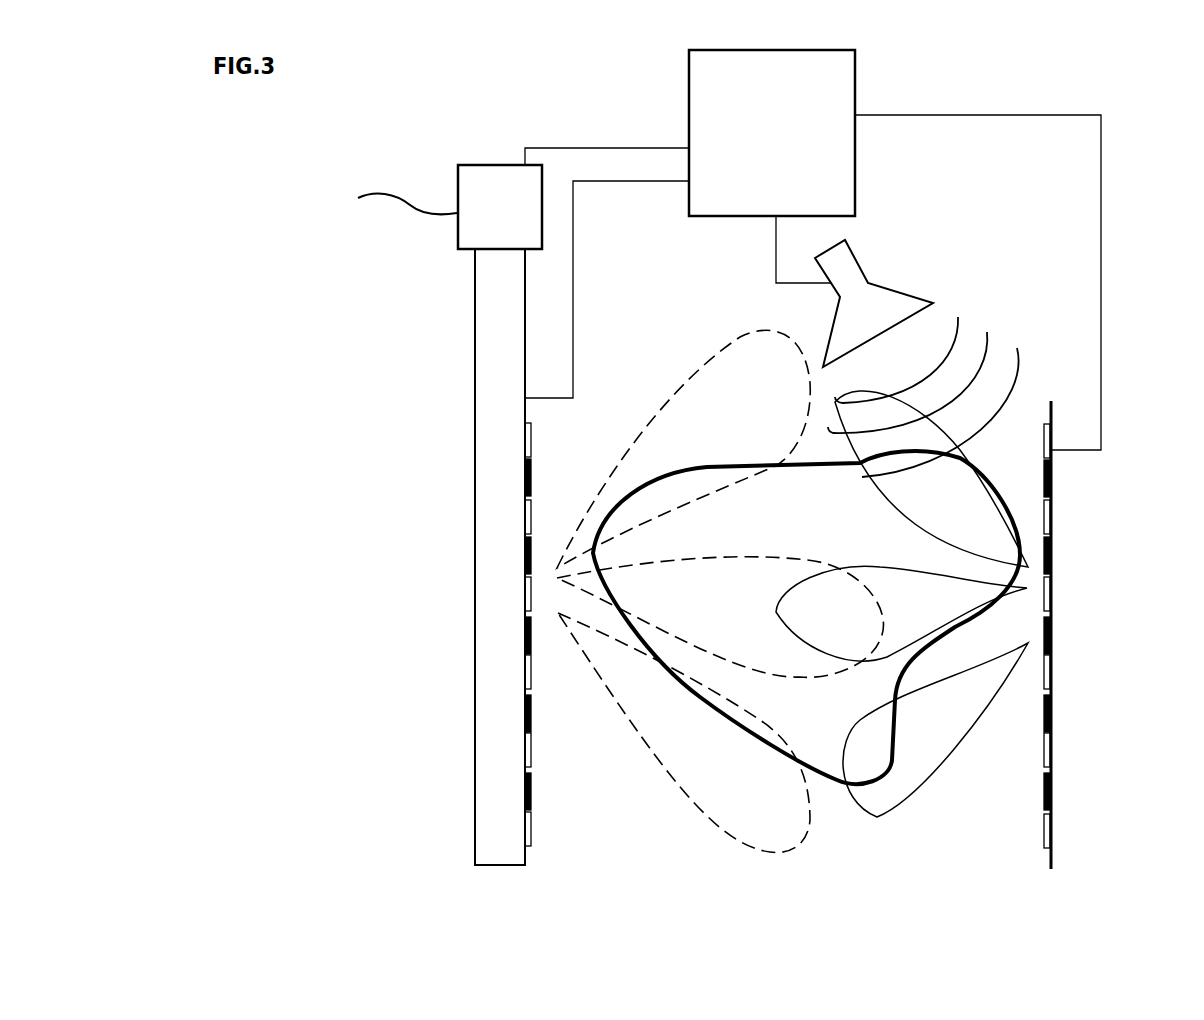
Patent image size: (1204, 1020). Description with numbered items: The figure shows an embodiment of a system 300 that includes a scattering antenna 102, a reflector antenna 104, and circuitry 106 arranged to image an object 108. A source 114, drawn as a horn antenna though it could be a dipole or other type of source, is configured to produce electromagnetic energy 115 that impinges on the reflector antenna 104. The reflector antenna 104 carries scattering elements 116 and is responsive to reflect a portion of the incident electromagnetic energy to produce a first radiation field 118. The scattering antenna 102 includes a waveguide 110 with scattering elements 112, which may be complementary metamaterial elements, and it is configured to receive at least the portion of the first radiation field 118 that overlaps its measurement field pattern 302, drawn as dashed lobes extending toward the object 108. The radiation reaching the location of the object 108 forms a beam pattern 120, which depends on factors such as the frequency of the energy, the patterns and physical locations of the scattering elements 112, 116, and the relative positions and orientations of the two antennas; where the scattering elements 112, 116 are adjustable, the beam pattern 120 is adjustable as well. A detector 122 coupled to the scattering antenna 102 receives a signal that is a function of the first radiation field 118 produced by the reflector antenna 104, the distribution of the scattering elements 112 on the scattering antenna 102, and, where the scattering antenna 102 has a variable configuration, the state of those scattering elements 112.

The system 300 is at (320, 782).
The measurement field pattern 302 is at (697, 372).
The scattering antenna 102 is at (475, 587).
The reflector antenna 104 is at (1050, 857).
The circuitry 106 is at (813, 250).
The object 108 is at (810, 587).
The waveguide 110 is at (475, 460).
The scattering elements 112 is at (530, 788).
The source 114 is at (860, 262).
The electromagnetic energy 115 is at (1013, 390).
The scattering elements 116 is at (1047, 793).
The first radiation field 118 is at (858, 800).
The beam pattern 120 is at (880, 817).
The detector 122 is at (387, 207).